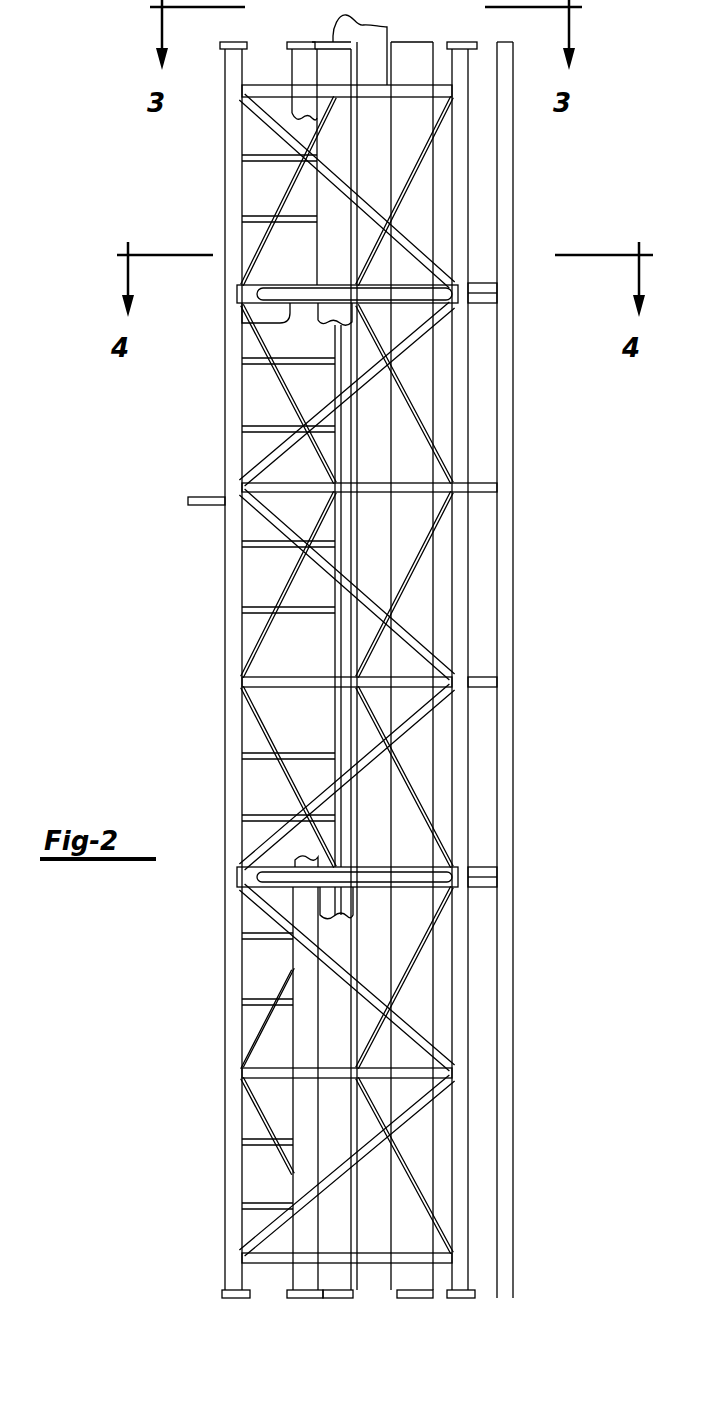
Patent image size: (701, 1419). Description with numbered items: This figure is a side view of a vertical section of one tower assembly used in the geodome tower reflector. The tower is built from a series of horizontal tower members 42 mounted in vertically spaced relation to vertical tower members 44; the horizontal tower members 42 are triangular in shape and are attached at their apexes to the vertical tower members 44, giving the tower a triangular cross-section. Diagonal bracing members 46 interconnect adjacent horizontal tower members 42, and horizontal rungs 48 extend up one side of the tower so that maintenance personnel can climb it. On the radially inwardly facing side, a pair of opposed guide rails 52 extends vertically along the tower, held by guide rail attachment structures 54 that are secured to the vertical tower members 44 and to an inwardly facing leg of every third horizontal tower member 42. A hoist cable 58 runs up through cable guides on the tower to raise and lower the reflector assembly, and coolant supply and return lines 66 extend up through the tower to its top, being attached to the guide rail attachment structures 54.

The horizontal tower members 42 is at (270, 88).
The vertical tower members 44 is at (350, 636).
The diagonal bracing members 46 is at (426, 392).
The horizontal rungs 48 is at (260, 441).
The guide rails 52 is at (445, 65).
The guide rail attachment structures 54 is at (284, 318).
The hoist cable 58 is at (361, 838).
The coolant supply and return lines 66 is at (300, 1120).